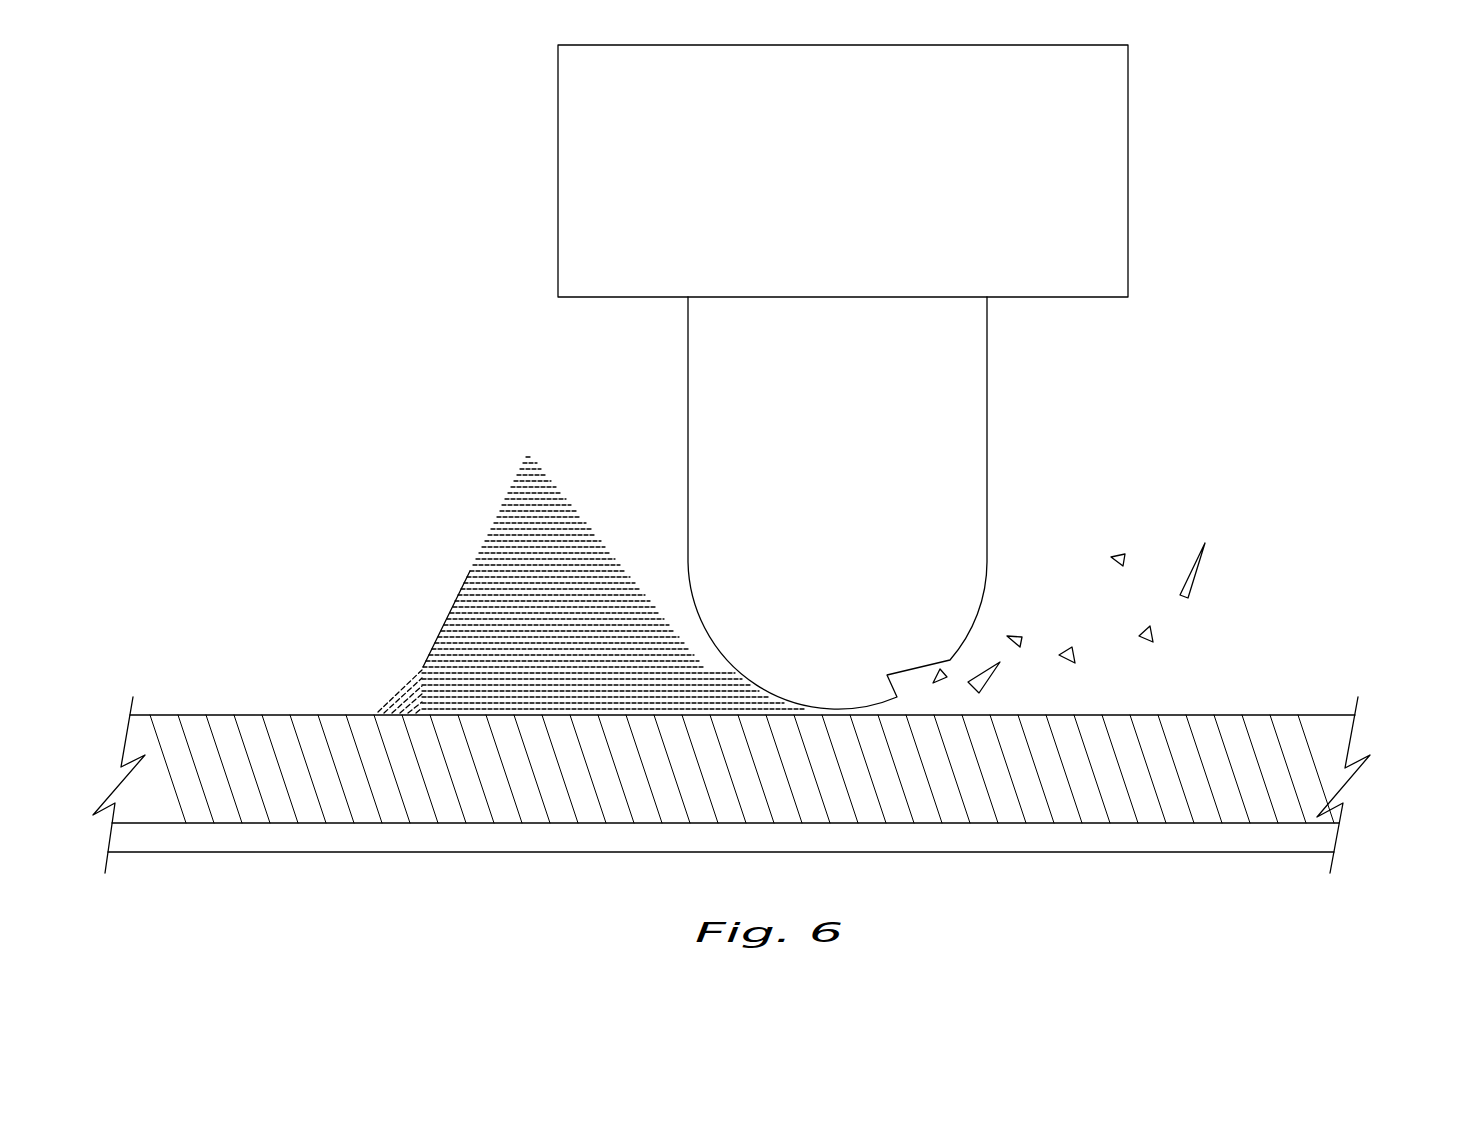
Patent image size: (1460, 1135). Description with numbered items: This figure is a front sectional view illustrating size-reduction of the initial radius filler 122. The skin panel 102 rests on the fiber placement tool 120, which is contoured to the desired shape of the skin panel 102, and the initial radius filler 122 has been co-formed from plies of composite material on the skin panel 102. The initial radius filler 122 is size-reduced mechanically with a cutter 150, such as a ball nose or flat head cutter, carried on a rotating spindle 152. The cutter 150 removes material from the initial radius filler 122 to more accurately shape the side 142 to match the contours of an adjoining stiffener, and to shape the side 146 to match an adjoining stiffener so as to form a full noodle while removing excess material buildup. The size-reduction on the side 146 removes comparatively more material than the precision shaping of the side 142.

The rotating spindle 152 is at (558, 142).
The cutter 150 is at (987, 390).
The side 142 is at (560, 508).
The side 146 is at (500, 563).
The initial radius filler 122 is at (418, 606).
The fiber placement tool 120 is at (1328, 775).
The skin panel 102 is at (1225, 840).